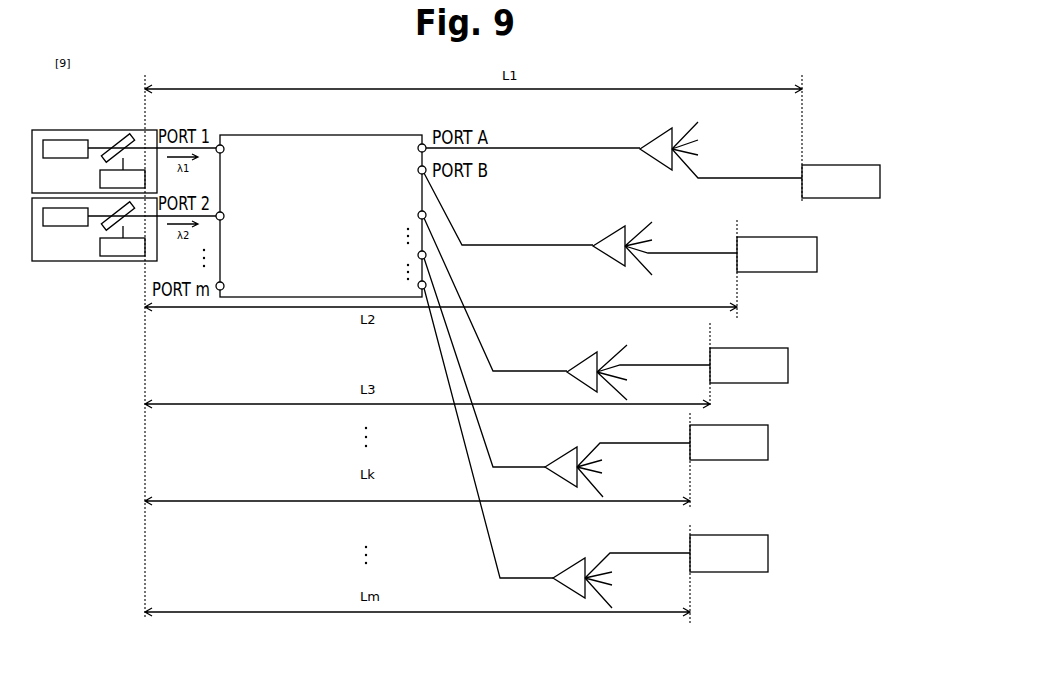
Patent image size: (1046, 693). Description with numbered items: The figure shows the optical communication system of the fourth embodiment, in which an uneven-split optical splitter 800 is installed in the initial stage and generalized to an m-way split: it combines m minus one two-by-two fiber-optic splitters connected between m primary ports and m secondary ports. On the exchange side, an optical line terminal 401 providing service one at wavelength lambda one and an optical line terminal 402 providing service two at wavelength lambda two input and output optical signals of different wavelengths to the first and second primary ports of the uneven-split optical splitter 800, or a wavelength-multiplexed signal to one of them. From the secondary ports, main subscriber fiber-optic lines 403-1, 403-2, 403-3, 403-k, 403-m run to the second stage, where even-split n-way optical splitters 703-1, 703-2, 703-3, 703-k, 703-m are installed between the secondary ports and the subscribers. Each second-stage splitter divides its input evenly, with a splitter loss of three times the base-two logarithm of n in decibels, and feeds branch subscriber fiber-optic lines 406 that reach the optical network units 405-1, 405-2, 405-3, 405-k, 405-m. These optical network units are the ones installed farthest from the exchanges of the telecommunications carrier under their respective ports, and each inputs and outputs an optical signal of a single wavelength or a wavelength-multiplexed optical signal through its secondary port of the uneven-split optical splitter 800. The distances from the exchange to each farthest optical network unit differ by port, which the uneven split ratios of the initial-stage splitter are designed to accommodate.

The optical line terminal 401 is at (50, 130).
The optical line terminal 402 is at (52, 262).
The uneven-split optical splitter 800 is at (285, 135).
The main subscriber fiber-optic line 403-1 is at (500, 148).
The main subscriber fiber-optic line 403-2 is at (457, 231).
The main subscriber fiber-optic line 403-3 is at (485, 350).
The main subscriber fiber-optic line 403-k is at (488, 449).
The main subscriber fiber-optic line 403-m is at (498, 568).
The second-stage n-way optical splitter 703-1 is at (698, 122).
The second-stage n-way optical splitter 703-2 is at (647, 221).
The second-stage n-way optical splitter 703-3 is at (625, 345).
The second-stage n-way optical splitter 703-k is at (582, 487).
The second-stage n-way optical splitter 703-m is at (589, 598).
The branch subscriber fiber-optic lines 406 is at (700, 168).
The optical network unit 405-1 is at (830, 165).
The optical network unit 405-2 is at (785, 237).
The optical network unit 405-3 is at (745, 348).
The optical network unit 405-k is at (738, 461).
The optical network unit 405-m is at (745, 573).